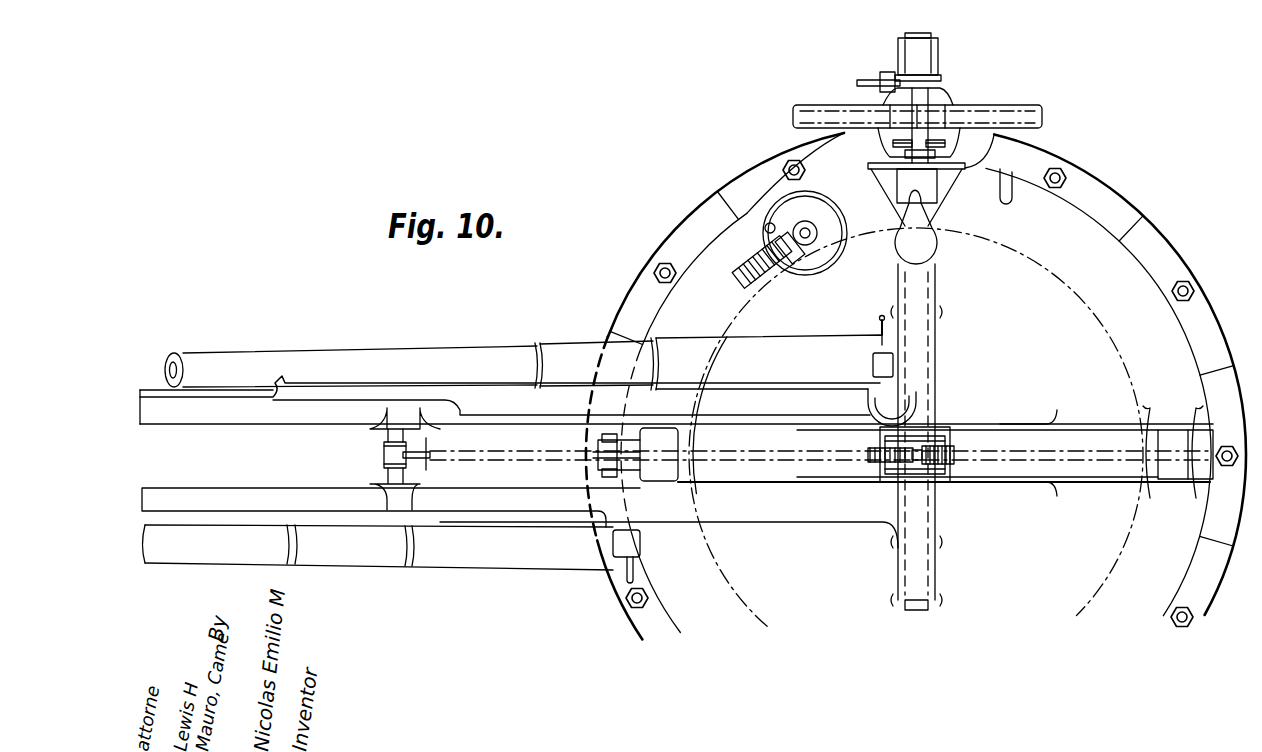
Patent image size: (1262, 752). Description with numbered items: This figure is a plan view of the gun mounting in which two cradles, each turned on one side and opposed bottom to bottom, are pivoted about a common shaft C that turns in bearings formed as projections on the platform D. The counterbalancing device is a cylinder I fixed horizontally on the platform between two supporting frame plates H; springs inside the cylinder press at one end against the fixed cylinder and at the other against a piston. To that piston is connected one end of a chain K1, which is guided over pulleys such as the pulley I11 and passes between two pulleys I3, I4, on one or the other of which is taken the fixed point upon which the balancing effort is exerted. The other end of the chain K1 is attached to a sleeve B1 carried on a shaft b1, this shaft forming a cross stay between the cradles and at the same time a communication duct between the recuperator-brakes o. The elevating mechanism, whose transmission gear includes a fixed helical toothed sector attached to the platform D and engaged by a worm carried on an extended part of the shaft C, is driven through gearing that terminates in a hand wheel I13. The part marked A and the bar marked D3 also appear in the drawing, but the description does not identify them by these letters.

The gun barrel A is at (343, 362).
The recuperator-brake o is at (279, 416).
The sleeve B1 is at (388, 454).
The shaft b1 is at (390, 473).
The chain K1 is at (523, 457).
The pulley I11 is at (594, 464).
The cylinder I is at (756, 473).
The pulley I3 is at (881, 458).
The pulley I4 is at (950, 459).
The supporting frame plate H is at (988, 425).
The shaft C is at (922, 298).
The platform D is at (1187, 352).
The cross bar D3 is at (1044, 121).
The hand wheel I13 is at (958, 206).